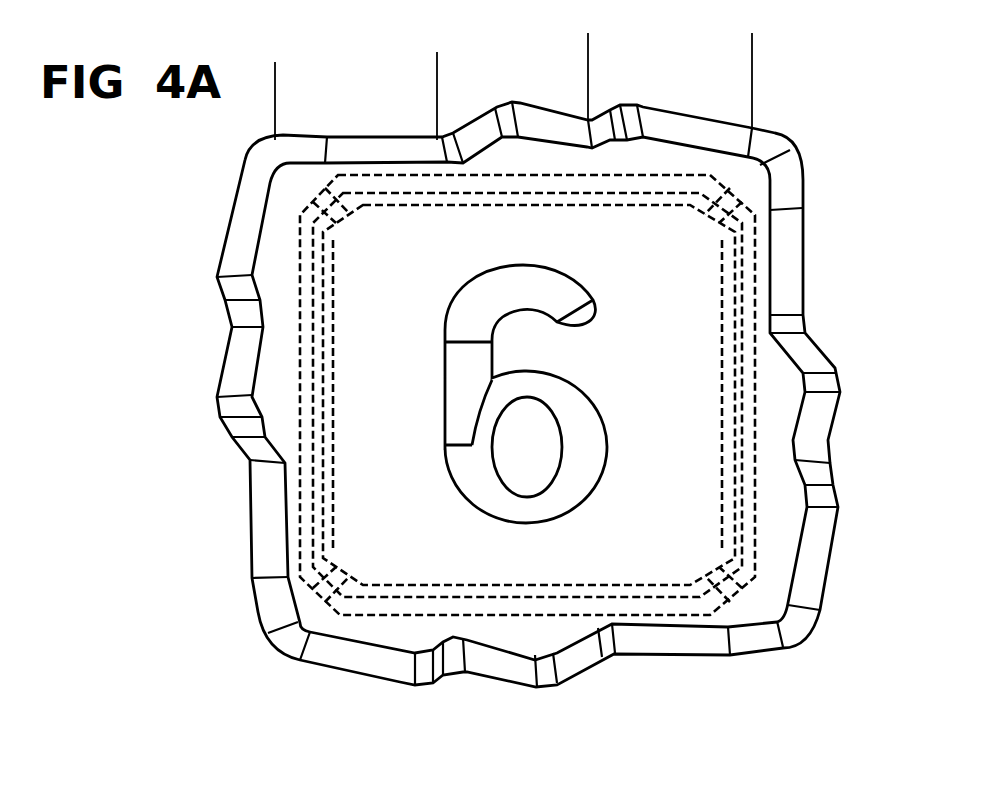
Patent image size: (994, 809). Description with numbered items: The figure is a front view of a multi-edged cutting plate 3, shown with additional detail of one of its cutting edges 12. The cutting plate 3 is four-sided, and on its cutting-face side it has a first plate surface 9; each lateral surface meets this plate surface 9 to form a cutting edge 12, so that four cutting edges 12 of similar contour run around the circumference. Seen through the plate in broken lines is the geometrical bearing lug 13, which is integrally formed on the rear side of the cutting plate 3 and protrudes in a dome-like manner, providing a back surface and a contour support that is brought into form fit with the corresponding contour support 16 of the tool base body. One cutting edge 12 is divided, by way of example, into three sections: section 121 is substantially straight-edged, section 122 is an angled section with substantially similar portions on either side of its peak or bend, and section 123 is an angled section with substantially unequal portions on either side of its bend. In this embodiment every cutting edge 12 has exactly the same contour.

The cutting plate 3 is at (228, 432).
The plate surface 9 is at (767, 593).
The cutting edge 12 is at (224, 313).
The geometrical bearing lug 13 is at (708, 262).
The contour support of the tool base body 16 is at (752, 448).
The section 121 is at (437, 101).
The section 122 is at (588, 73).
The section 123 is at (752, 47).